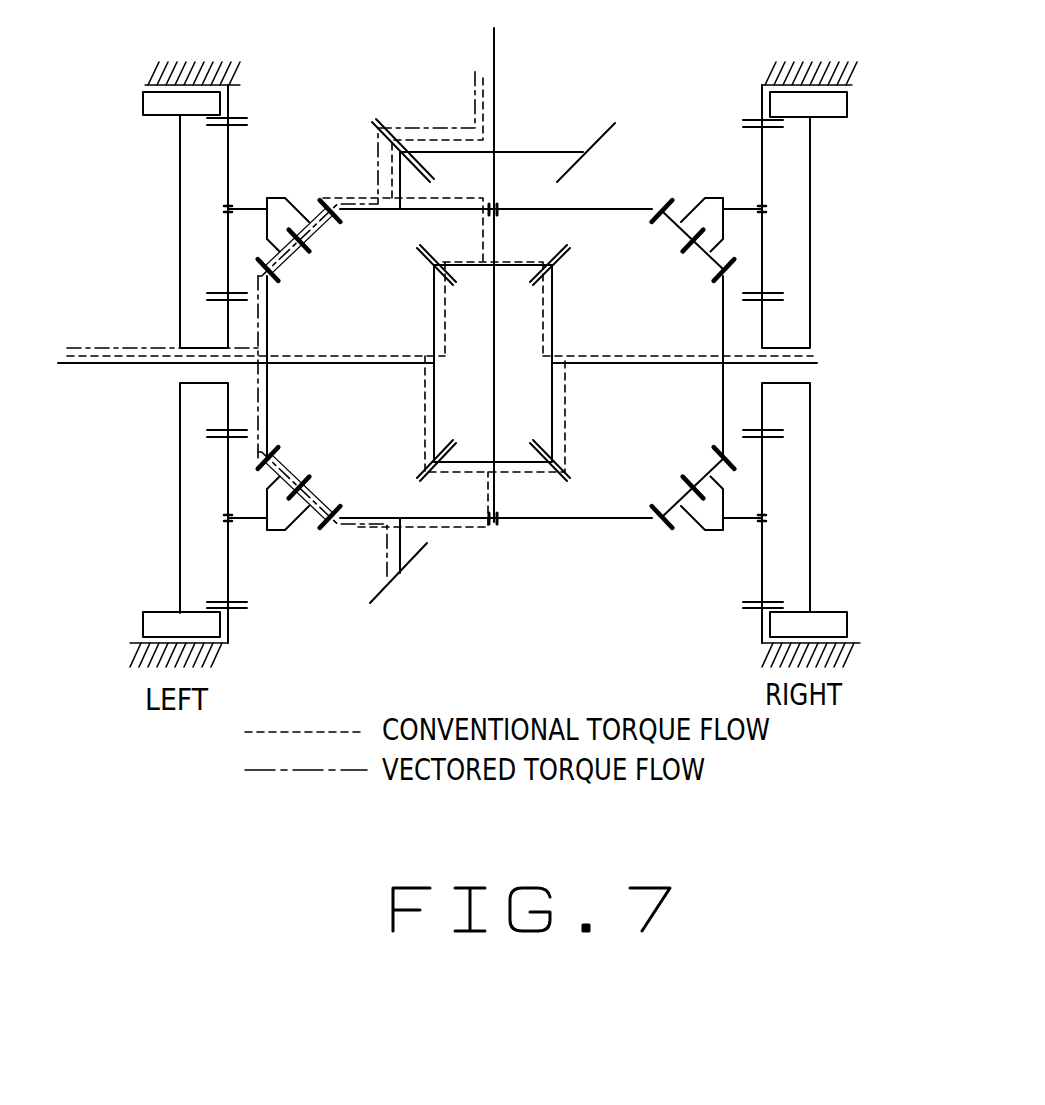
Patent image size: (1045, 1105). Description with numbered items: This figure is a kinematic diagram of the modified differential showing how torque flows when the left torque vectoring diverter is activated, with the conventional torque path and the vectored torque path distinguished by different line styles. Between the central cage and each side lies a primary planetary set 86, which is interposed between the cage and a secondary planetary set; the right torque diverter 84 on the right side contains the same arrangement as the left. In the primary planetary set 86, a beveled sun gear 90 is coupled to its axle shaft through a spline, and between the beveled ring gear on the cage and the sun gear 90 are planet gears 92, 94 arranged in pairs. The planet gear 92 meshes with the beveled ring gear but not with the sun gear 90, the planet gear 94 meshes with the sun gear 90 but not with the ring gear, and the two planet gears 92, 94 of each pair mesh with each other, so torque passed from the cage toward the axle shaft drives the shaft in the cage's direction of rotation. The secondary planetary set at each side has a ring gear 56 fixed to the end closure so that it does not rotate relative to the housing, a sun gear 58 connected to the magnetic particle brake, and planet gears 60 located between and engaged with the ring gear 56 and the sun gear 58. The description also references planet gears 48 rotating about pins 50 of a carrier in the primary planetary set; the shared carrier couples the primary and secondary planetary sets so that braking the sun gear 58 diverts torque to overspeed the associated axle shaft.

The planet gear 48 is at (358, 525).
The pin 50 is at (272, 531).
The ring gear 56 is at (232, 97).
The sun gear 58 is at (227, 325).
The planet gear 60 is at (229, 164).
The right torque diverter 84 is at (860, 261).
The primary planetary set 86 is at (160, 463).
The beveled sun gear 90 is at (267, 383).
The planet gear 92 is at (316, 515).
The planet gear 94 is at (285, 458).